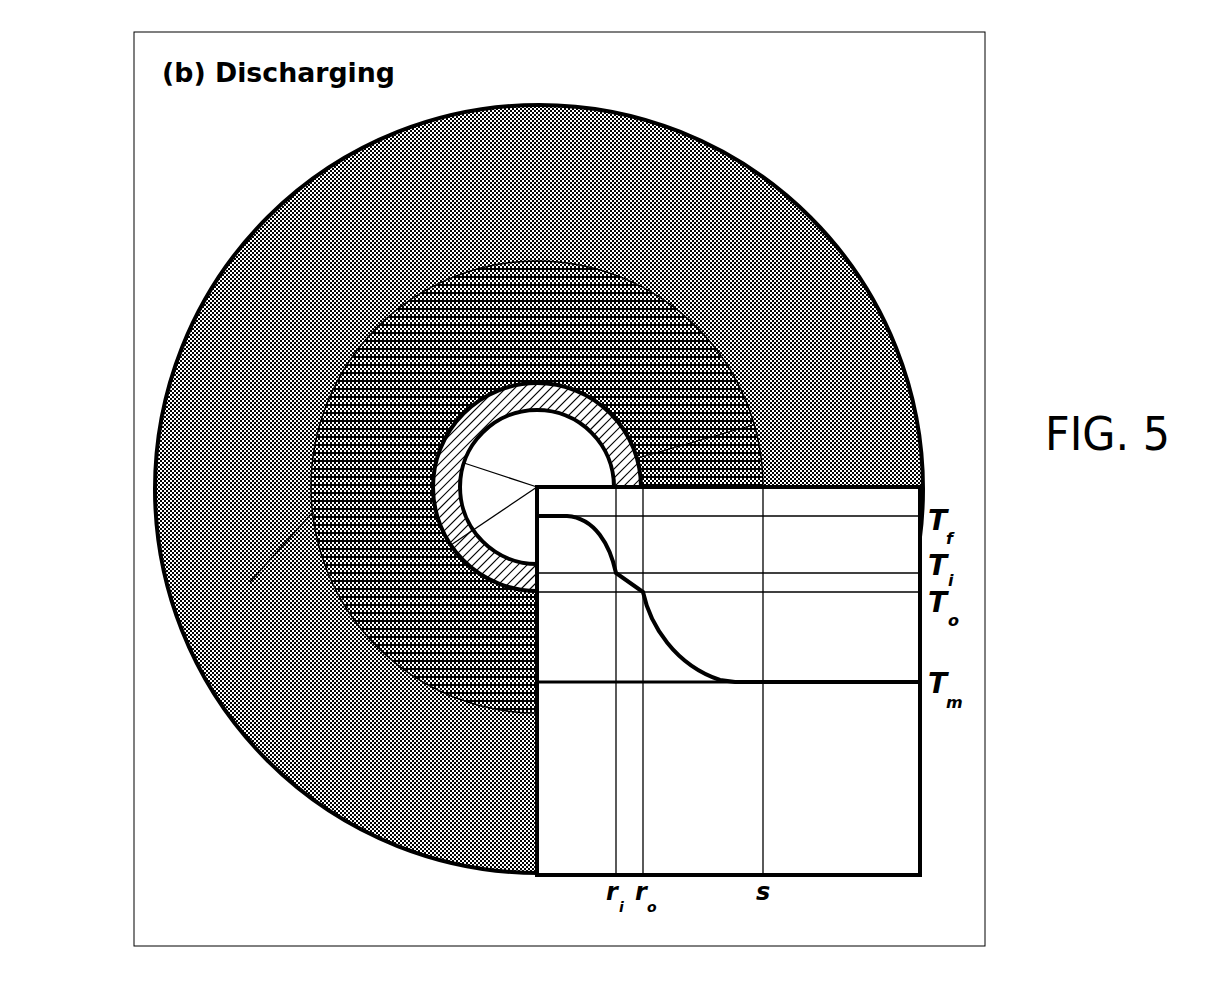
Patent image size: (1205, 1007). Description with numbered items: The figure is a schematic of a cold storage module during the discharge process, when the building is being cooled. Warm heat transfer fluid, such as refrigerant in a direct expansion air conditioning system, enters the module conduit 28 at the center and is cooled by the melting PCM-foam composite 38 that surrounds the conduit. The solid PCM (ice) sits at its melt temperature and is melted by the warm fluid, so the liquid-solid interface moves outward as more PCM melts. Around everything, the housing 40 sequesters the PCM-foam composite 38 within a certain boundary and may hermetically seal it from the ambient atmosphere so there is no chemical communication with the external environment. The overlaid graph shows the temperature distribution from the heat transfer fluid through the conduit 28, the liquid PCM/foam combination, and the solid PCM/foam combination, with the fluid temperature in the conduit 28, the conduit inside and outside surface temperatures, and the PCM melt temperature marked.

The module conduit 28 is at (500, 407).
The PCM-foam composite 38 is at (490, 487).
The housing 40 is at (778, 188).